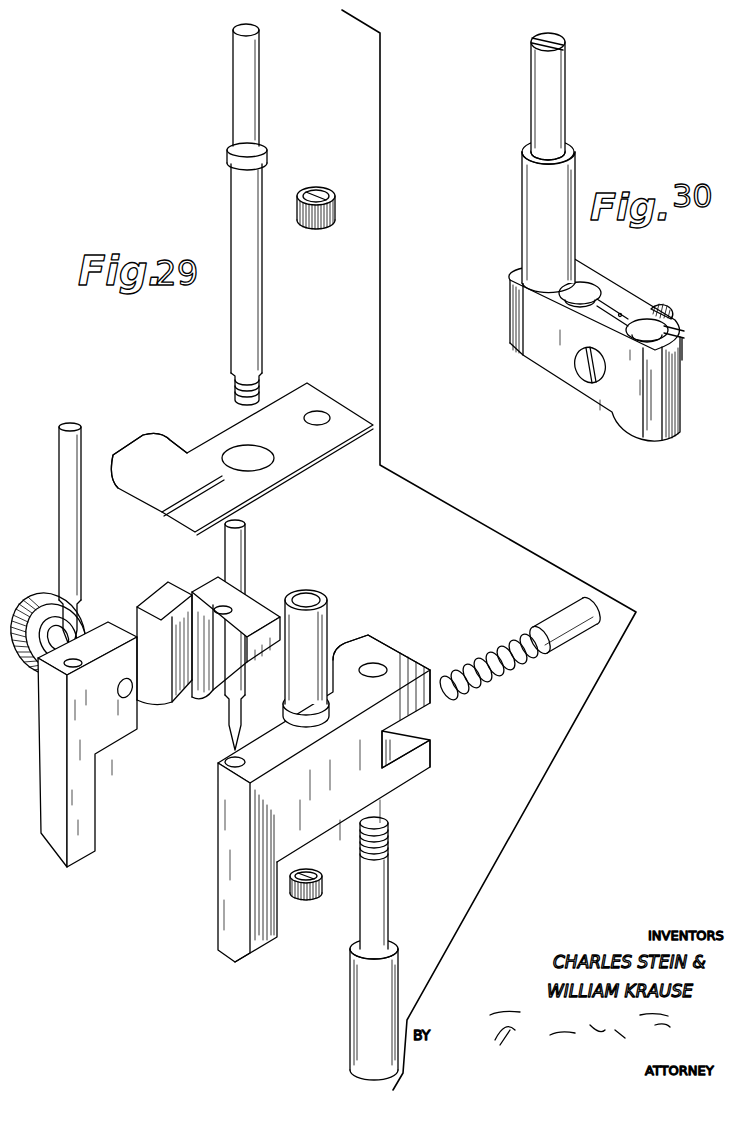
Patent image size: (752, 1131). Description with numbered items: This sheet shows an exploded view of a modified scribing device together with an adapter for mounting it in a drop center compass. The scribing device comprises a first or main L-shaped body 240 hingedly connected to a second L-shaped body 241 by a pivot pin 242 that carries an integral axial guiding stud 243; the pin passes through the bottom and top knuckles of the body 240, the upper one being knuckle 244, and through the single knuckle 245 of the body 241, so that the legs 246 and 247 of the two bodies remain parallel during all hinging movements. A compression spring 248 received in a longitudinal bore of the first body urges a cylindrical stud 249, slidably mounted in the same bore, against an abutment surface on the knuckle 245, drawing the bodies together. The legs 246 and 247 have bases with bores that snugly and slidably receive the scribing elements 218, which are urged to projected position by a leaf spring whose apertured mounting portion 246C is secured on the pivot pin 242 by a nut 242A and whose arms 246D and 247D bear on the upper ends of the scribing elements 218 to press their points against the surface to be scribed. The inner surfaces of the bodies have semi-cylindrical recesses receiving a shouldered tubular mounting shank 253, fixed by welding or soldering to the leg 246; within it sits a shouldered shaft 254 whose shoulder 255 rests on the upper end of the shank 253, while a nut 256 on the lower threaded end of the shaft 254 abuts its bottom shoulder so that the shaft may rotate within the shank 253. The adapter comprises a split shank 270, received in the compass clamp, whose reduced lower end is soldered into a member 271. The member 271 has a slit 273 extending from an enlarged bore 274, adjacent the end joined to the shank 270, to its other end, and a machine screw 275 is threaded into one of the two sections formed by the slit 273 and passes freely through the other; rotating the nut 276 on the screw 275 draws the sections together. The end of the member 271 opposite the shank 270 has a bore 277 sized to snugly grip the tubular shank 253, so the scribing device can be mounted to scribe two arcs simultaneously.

In FIG. 29, the scribing element 218 is at (58, 498).
In FIG. 29, the first L-shaped body 240 is at (352, 795).
In FIG. 29, the second L-shaped body 241 is at (139, 726).
In FIG. 29, the pivot pin 242 is at (381, 889).
In FIG. 29, the nut 242A is at (306, 223).
In FIG. 29, the guiding stud / bottom knuckle 243 is at (432, 750).
In FIG. 29, the top knuckle 244 is at (425, 676).
In FIG. 29, the knuckle 245 is at (258, 609).
In FIG. 29, the leg 246 is at (228, 892).
In FIG. 29, the apertured mounting portion 246C is at (313, 395).
In FIG. 29, the leaf spring arm 246D is at (188, 513).
In FIG. 29, the leg 247 is at (91, 804).
In FIG. 29, the leaf spring arm 247D is at (188, 462).
In FIG. 29, the compression spring 248 is at (498, 676).
In FIG. 29, the cylindrical stud 249 is at (568, 632).
In FIG. 29, the shouldered tubular mounting shank 253 is at (323, 633).
In FIG. 29, the shouldered shaft 254 is at (258, 116).
In FIG. 29, the shoulder 255 is at (266, 162).
In FIG. 29, the nut 256 is at (303, 898).
In FIG. 30, the split shank 270 is at (567, 173).
In FIG. 30, the member (adapter body) 271 is at (526, 350).
In FIG. 30, the slit 273 is at (620, 315).
In FIG. 30, the enlarged bore 274 is at (596, 289).
In FIG. 30, the machine screw 275 is at (592, 377).
In FIG. 30, the nut 276 is at (670, 311).
In FIG. 30, the bore 277 is at (668, 333).